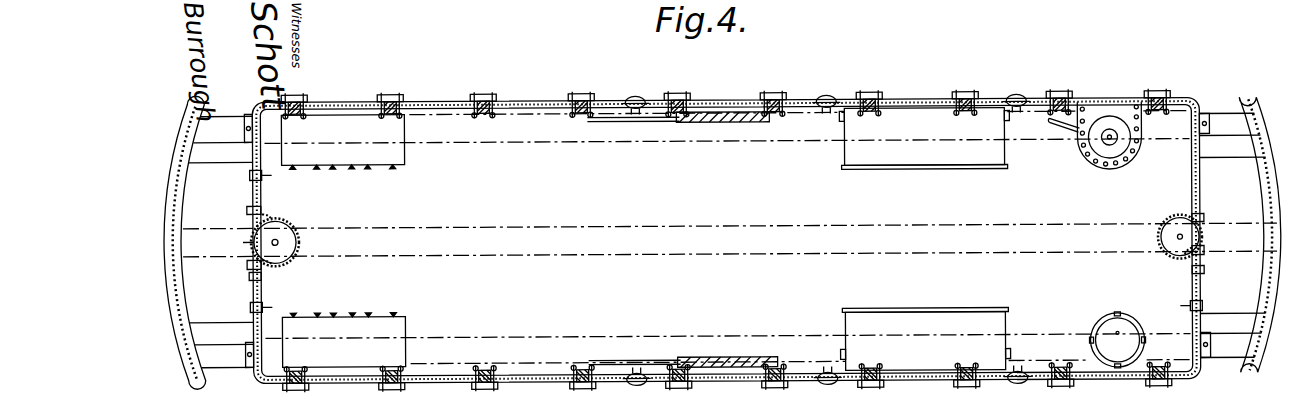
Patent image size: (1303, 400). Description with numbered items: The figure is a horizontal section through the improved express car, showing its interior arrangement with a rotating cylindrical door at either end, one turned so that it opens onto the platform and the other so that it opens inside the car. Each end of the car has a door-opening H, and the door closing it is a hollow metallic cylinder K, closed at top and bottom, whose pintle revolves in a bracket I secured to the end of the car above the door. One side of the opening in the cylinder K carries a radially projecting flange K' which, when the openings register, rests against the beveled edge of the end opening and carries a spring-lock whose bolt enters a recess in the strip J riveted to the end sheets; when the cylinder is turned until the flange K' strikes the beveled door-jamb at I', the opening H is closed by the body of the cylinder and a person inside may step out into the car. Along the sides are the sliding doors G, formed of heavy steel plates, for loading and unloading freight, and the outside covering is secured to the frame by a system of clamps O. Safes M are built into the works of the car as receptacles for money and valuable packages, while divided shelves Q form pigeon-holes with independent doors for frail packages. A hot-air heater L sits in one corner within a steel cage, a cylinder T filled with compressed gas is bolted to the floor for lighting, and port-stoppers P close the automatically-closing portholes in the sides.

The clamps O is at (583, 97).
The port-stopper P is at (1206, 301).
The sliding doors G is at (736, 122).
The safes M is at (385, 160).
The divided shelves Q is at (924, 239).
The hot-air heater L is at (1100, 141).
The cylinder T is at (1117, 331).
The hollow metallic cylinder K is at (726, 231).
The flange K' is at (720, 253).
The door-openings H is at (238, 242).
The bracket I is at (246, 209).
The beveled door-jamb I' is at (1209, 268).
The strip J is at (249, 273).